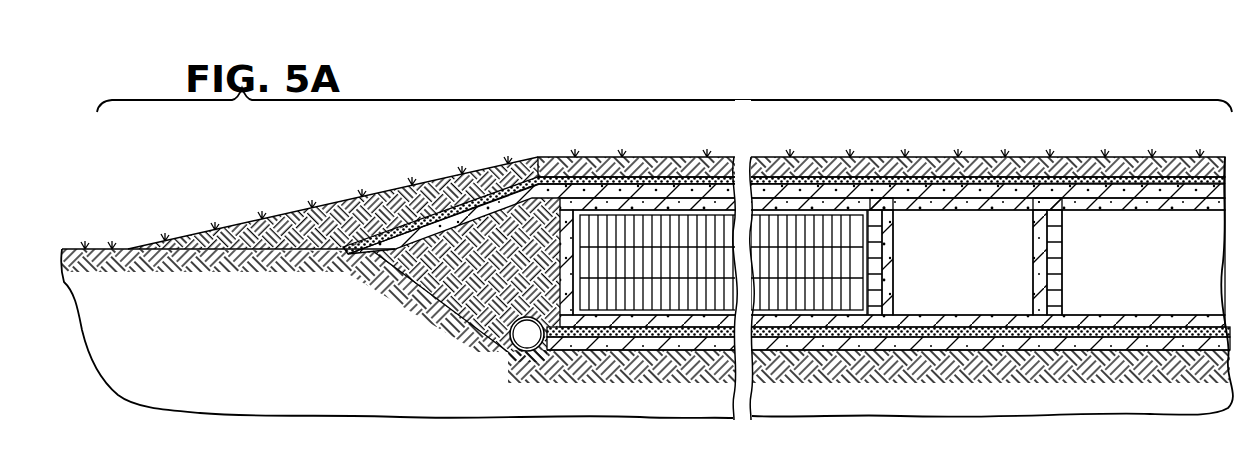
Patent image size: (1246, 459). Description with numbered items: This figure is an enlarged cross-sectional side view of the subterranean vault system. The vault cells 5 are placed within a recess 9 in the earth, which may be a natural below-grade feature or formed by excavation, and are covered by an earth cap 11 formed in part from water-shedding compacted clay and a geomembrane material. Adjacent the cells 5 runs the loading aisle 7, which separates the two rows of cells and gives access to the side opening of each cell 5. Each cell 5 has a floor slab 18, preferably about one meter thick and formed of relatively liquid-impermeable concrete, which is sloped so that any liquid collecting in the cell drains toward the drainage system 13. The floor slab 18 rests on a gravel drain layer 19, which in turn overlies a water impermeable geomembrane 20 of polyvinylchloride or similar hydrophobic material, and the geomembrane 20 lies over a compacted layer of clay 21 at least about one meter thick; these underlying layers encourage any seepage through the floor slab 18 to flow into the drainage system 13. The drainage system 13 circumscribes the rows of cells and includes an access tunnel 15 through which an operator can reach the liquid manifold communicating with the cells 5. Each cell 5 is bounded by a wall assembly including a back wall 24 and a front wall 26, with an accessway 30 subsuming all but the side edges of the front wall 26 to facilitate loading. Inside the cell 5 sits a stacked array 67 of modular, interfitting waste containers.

The vault cell 5 is at (700, 267).
The loading aisle 7 is at (970, 284).
The recess 9 is at (612, 355).
The earth cap 11 is at (668, 157).
The drainage system 13 is at (513, 349).
The access tunnel 15 is at (531, 362).
The floor slab 18 is at (752, 350).
The gravel drain layer 19 is at (730, 322).
The geomembrane 20 is at (713, 333).
The compacted layer of clay 21 is at (655, 343).
The back wall 24 is at (560, 248).
The front wall 26 is at (893, 274).
The accessway 30 is at (1028, 227).
The stacked array 67 is at (739, 165).